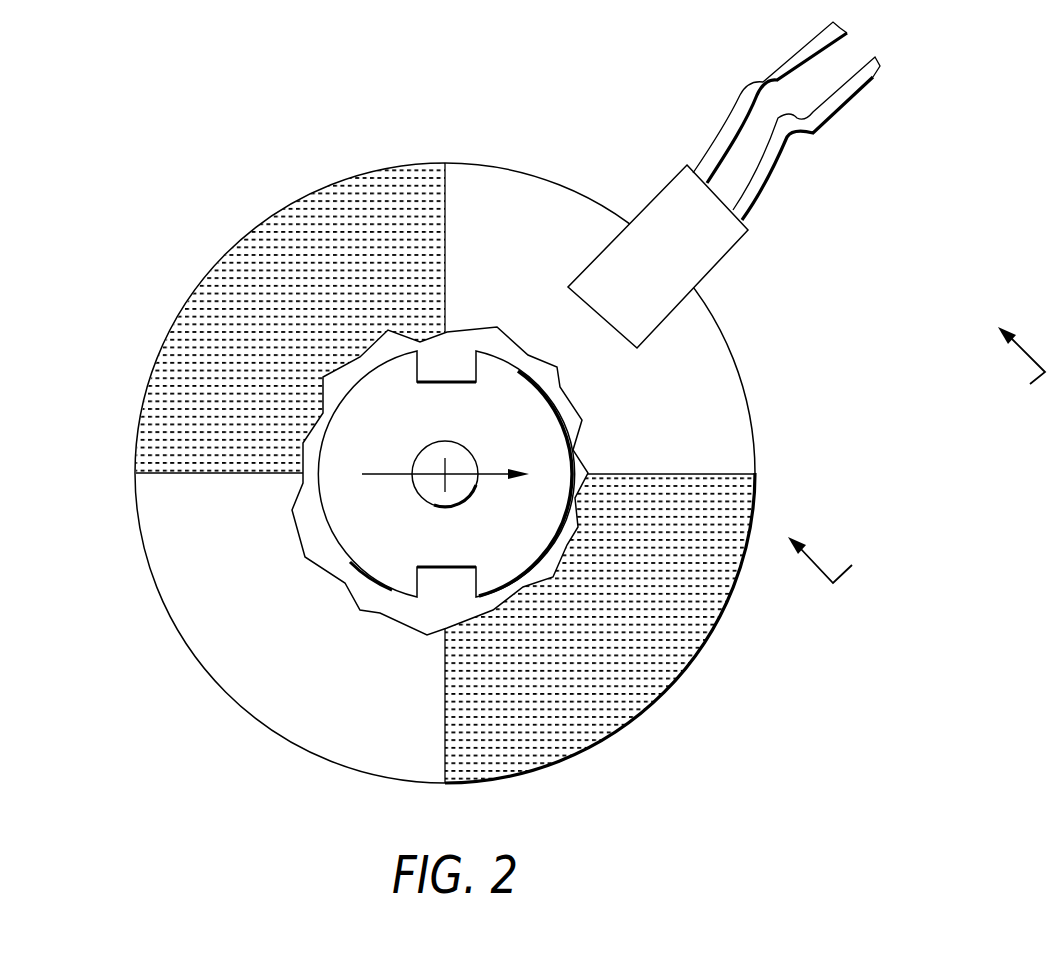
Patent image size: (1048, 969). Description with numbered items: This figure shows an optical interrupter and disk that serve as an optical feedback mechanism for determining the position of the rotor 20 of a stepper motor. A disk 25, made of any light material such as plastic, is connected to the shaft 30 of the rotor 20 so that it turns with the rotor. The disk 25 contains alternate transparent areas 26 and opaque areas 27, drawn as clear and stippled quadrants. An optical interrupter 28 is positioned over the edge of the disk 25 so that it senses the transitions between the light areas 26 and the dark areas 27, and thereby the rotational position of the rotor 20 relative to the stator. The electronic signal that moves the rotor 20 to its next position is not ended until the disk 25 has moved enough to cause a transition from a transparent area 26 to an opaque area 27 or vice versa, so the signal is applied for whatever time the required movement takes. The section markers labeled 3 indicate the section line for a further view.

The rotor 20 is at (355, 591).
The disk 25 is at (550, 405).
The transparent areas 26 is at (528, 192).
The opaque areas 27 is at (203, 347).
The optical interrupter 28 is at (723, 237).
The shaft 30 is at (427, 505).
The section line 3- 3 is at (910, 445).